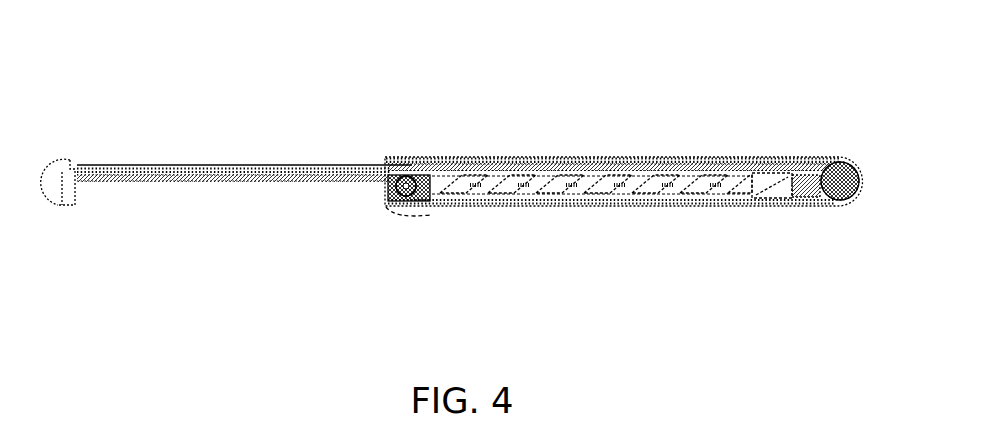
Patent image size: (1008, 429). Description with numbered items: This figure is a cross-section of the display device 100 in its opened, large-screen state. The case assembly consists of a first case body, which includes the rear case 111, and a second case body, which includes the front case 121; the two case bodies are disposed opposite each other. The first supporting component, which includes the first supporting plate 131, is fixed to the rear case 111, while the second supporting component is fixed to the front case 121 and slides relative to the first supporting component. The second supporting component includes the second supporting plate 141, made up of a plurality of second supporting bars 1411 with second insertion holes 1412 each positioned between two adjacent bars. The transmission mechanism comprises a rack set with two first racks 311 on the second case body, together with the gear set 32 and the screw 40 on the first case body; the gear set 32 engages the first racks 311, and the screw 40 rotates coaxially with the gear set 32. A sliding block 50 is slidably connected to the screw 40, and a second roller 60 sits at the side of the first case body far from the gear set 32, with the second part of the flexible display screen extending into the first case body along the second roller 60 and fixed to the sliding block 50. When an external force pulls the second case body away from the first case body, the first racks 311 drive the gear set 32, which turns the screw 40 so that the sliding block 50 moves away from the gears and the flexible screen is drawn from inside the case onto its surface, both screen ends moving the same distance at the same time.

The display device 100 is at (147, 98).
The rear case 111 is at (872, 204).
The front case 121 is at (63, 206).
The first supporting plate 131 is at (600, 160).
The second supporting plate 141 is at (233, 229).
The second supporting bars 1411 is at (145, 172).
The second insertion holes 1412 is at (193, 178).
The first racks 311 is at (258, 172).
The gear set 32 is at (429, 211).
The screw 40 is at (588, 186).
The sliding block 50 is at (776, 192).
The second roller 60 is at (834, 201).